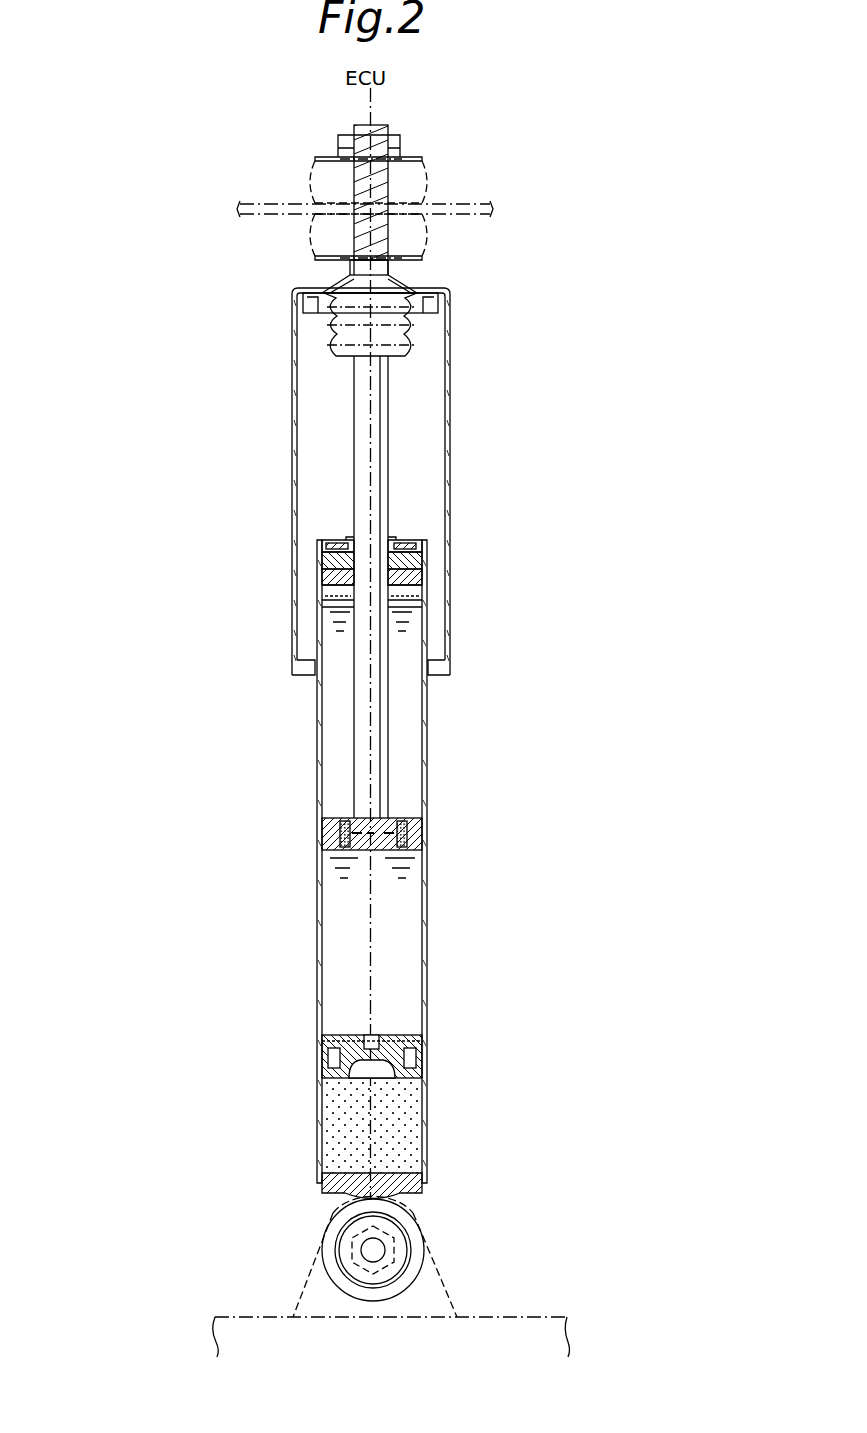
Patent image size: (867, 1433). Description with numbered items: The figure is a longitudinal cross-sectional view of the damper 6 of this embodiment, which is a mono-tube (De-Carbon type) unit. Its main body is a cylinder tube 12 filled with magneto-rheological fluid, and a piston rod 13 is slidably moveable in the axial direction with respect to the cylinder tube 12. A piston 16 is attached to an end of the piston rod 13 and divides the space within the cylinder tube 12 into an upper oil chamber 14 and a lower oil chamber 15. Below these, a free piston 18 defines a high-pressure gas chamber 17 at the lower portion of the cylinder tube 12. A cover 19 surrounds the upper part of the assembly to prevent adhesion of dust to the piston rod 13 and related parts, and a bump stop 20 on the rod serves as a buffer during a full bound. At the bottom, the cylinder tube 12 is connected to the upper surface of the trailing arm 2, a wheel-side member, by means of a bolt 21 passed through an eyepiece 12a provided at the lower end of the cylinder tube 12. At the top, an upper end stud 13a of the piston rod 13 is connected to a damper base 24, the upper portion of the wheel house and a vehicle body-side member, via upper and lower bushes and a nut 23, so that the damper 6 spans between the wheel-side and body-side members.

The trailing arm 2 is at (490, 1323).
The damper 6 is at (108, 399).
The cylinder tube 12 is at (320, 905).
The eyepiece 12a is at (327, 1238).
The piston rod 13 is at (357, 722).
The upper end stud 13a is at (354, 128).
The upper oil chamber 14 is at (408, 715).
The lower oil chamber 15 is at (407, 940).
The piston 16 is at (340, 818).
The high-pressure gas chamber 17 is at (405, 1120).
The free piston 18 is at (332, 1043).
The cover 19 is at (292, 485).
The bump stop 20 is at (334, 340).
The bolt 21 is at (395, 1248).
The nut 23 is at (397, 145).
The damper base 24 is at (268, 206).